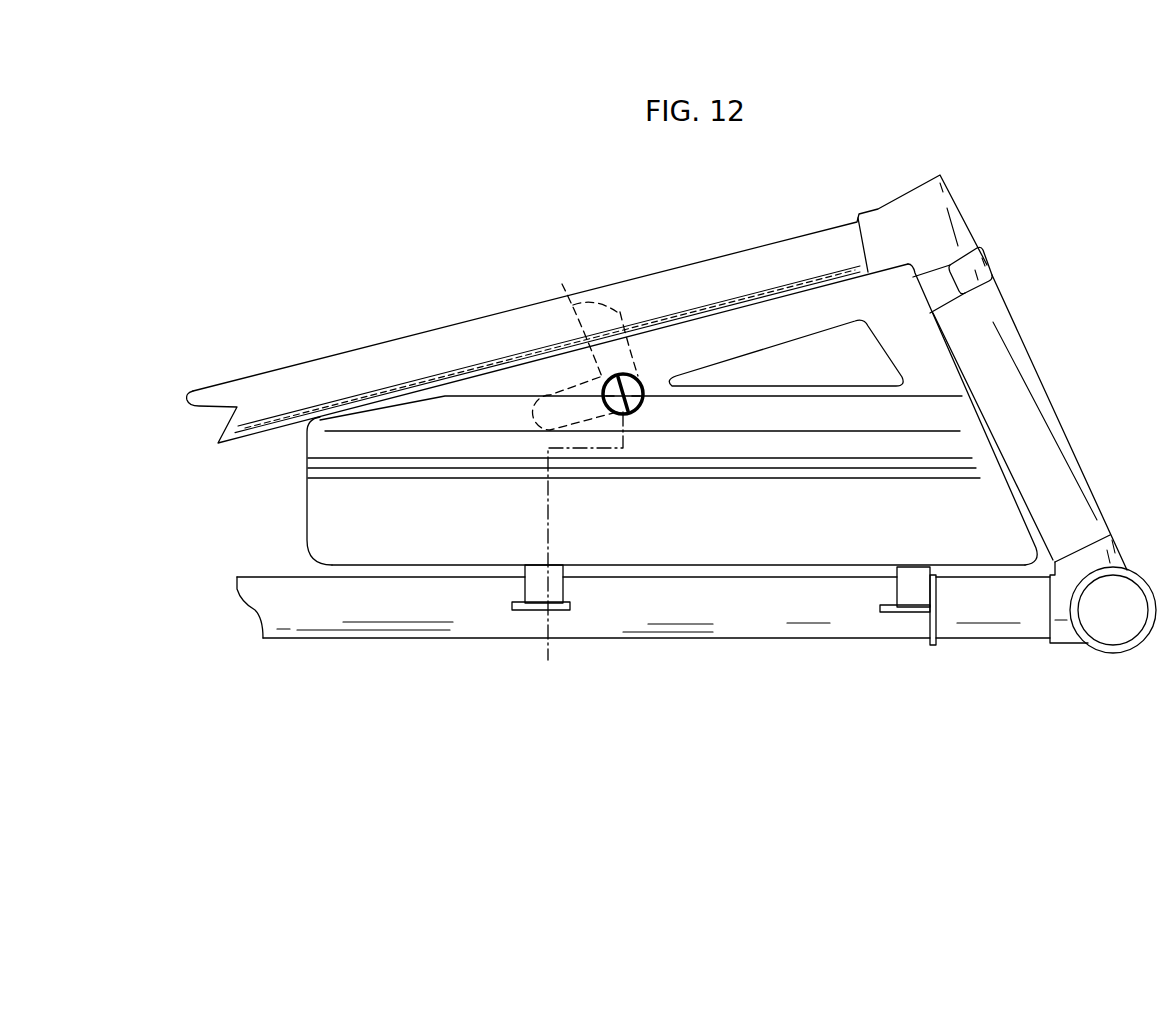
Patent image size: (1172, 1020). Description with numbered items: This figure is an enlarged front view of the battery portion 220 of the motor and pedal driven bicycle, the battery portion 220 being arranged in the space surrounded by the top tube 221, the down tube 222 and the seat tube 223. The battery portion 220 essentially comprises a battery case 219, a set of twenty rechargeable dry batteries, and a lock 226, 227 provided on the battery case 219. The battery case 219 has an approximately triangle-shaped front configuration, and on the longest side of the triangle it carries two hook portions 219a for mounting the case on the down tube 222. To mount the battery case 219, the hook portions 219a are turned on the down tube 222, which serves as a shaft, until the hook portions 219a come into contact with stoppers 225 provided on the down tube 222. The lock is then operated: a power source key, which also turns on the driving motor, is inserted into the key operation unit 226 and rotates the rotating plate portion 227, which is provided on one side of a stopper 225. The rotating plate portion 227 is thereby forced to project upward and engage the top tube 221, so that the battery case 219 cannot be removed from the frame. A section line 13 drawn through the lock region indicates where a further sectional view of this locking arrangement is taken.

The section line 13- 13 is at (625, 376).
The battery case 219 is at (740, 556).
The hook portion 219a is at (563, 590).
The battery portion 220 is at (288, 497).
The top tube 221 is at (422, 334).
The down tube 222 is at (483, 640).
The seat tube 223 is at (1053, 412).
The stopper 225 is at (557, 608).
The key operation unit 226 is at (640, 378).
The rotating plate portion 227 is at (580, 343).